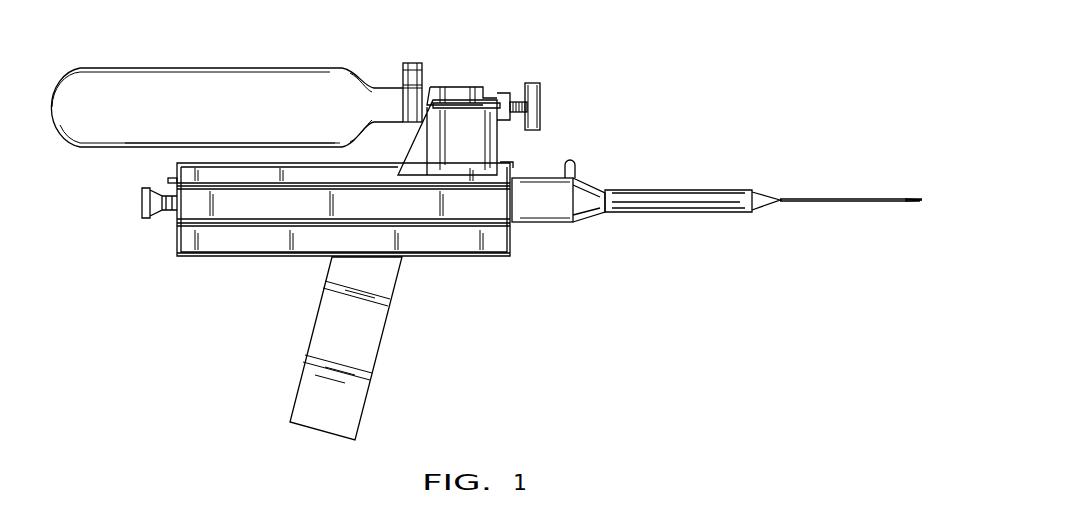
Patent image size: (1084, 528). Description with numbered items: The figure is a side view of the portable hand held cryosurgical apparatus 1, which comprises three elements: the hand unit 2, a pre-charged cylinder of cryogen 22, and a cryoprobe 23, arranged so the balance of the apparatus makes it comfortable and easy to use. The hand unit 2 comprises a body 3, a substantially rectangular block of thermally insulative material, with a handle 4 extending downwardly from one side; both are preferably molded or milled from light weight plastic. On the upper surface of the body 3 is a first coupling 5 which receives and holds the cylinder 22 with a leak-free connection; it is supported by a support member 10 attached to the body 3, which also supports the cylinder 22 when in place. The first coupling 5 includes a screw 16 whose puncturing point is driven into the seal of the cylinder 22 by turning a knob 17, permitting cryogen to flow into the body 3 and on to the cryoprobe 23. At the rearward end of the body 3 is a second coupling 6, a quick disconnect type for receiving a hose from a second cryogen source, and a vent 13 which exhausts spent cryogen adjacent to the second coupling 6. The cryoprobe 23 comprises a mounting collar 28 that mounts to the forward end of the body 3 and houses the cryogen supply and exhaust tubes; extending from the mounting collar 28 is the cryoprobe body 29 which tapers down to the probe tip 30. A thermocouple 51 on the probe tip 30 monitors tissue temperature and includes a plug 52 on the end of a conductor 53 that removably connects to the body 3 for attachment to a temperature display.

The hand held cryosurgical apparatus 1 is at (636, 96).
The hand unit 2 is at (434, 285).
The body 3 is at (253, 248).
The handle 4 is at (375, 347).
The first coupling 5 is at (455, 87).
The second coupling 6 is at (145, 218).
The support member 10 is at (497, 150).
The vent 13 is at (168, 180).
The screw 16 is at (512, 102).
The knob 17 is at (541, 102).
The cylinder of cryogen 22 is at (222, 68).
The cryoprobe 23 is at (686, 247).
The mounting collar 28 is at (532, 223).
The cryoprobe body 29 is at (702, 195).
The probe tip 30 is at (922, 208).
The thermocouple 51 is at (910, 197).
The plug 52 is at (572, 220).
The conductor 53 is at (572, 223).